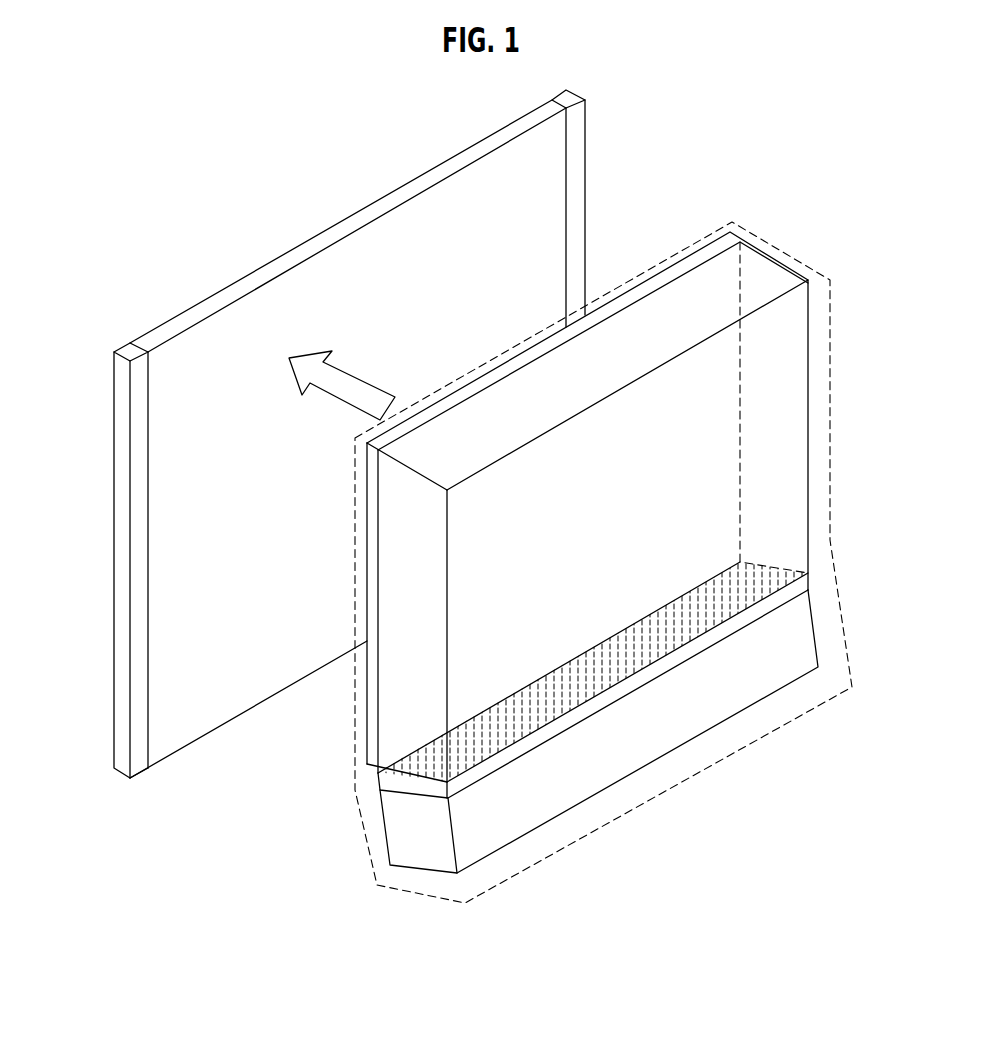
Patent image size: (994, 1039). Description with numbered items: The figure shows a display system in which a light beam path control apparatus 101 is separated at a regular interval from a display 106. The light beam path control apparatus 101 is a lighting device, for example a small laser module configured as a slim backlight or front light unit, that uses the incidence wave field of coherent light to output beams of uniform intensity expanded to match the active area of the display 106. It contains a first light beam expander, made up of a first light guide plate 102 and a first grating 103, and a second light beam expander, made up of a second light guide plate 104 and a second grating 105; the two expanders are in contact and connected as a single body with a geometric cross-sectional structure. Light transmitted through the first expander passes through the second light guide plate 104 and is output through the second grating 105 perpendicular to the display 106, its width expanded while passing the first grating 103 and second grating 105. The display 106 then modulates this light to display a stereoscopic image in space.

The light beam path control apparatus 101 is at (770, 243).
The first light guide plate 102 is at (570, 797).
The first grating 103 is at (618, 693).
The second light guide plate 104 is at (393, 665).
The second grating 105 is at (372, 559).
The display 106 is at (200, 338).